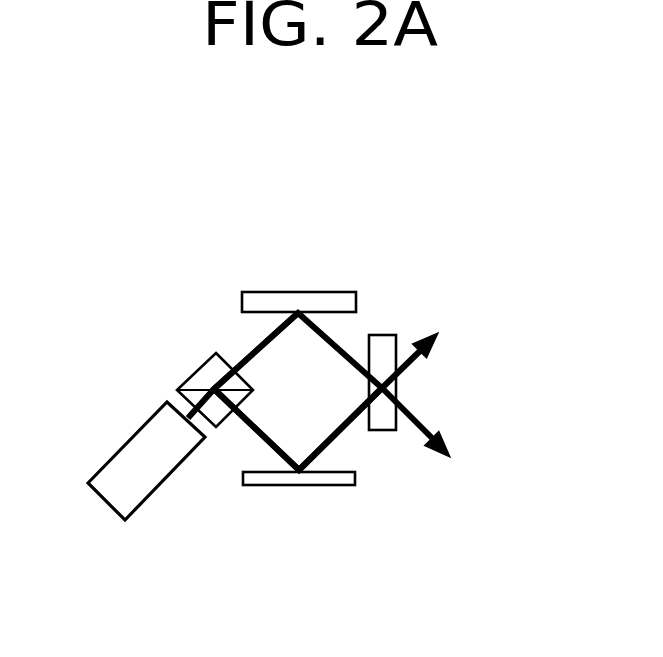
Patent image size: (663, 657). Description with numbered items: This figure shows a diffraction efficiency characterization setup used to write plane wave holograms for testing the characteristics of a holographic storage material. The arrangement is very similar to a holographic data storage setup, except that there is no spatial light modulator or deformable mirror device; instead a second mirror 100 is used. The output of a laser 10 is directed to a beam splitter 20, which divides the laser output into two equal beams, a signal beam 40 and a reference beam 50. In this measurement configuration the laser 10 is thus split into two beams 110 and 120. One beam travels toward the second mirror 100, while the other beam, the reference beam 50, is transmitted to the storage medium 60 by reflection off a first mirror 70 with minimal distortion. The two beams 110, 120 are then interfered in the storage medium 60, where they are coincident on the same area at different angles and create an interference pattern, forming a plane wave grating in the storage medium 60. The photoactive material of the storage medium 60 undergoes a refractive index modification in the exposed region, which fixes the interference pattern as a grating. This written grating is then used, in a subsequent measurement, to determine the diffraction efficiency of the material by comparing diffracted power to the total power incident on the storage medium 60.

The laser 10 is at (100, 500).
The beam splitter 20 is at (195, 370).
The signal beam 40 is at (345, 345).
The reference beam 50 is at (345, 432).
The storage medium 60 is at (397, 388).
The first mirror 70 is at (328, 486).
The second mirror 100 is at (310, 290).
The beam 110 is at (247, 343).
The beam 120 is at (252, 437).